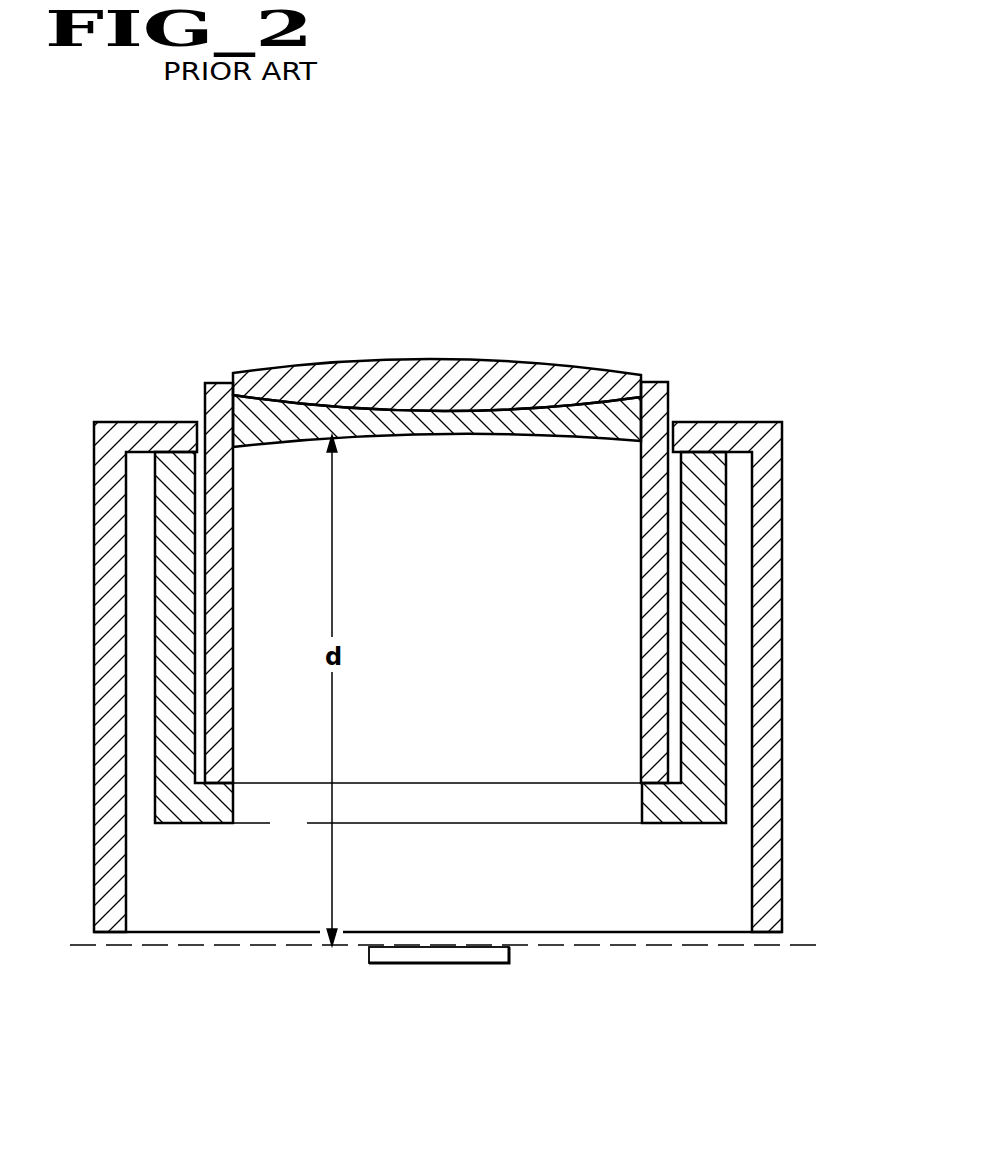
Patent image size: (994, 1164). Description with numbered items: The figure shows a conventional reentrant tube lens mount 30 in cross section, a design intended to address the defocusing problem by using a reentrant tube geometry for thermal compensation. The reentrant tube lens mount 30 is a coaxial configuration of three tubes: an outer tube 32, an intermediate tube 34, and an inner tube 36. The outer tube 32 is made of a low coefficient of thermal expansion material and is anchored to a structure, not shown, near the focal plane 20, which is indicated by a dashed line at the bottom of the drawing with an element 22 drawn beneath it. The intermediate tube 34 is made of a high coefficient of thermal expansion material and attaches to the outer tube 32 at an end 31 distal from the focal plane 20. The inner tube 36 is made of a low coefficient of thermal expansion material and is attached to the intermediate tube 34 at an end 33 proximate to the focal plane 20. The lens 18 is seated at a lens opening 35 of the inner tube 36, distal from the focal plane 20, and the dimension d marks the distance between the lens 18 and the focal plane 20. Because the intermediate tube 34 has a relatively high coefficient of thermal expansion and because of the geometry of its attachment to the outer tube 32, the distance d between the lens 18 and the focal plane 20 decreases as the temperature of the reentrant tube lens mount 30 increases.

The lens 18 is at (512, 382).
The focal plane 20 is at (248, 947).
The detector 22 is at (452, 967).
The reentrant tube lens mount 30 is at (800, 453).
The end distal from focal plane 31 is at (175, 826).
The outer tube 32 is at (783, 800).
The end proximate to focal plane 33 is at (238, 757).
The intermediate tube 34 is at (690, 828).
The lens opening 35 is at (292, 349).
The inner tube 36 is at (642, 722).